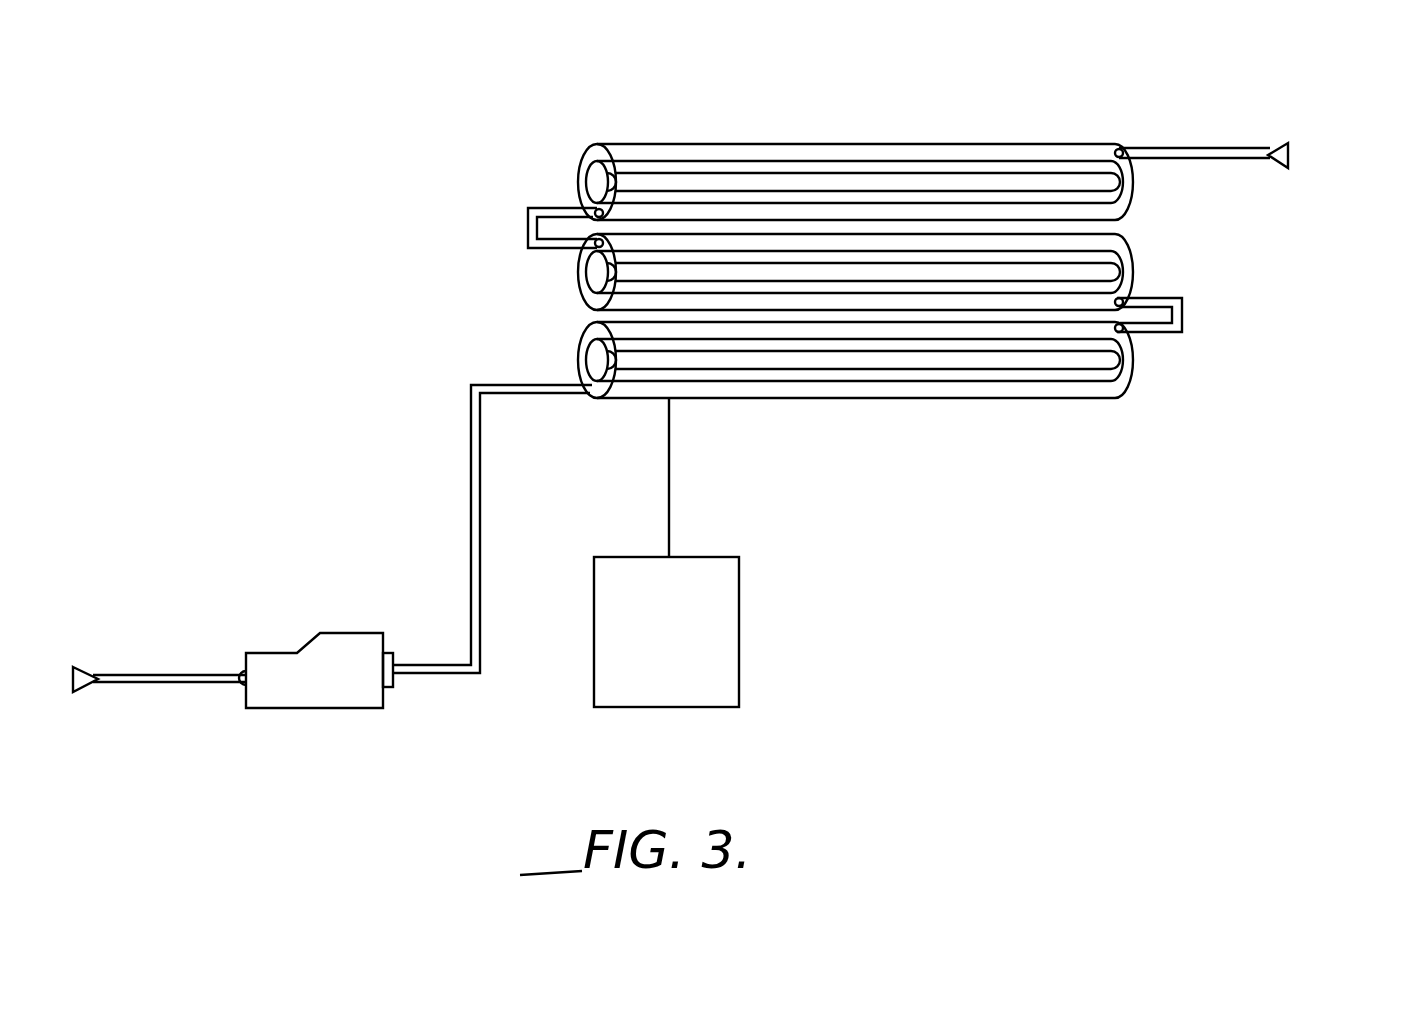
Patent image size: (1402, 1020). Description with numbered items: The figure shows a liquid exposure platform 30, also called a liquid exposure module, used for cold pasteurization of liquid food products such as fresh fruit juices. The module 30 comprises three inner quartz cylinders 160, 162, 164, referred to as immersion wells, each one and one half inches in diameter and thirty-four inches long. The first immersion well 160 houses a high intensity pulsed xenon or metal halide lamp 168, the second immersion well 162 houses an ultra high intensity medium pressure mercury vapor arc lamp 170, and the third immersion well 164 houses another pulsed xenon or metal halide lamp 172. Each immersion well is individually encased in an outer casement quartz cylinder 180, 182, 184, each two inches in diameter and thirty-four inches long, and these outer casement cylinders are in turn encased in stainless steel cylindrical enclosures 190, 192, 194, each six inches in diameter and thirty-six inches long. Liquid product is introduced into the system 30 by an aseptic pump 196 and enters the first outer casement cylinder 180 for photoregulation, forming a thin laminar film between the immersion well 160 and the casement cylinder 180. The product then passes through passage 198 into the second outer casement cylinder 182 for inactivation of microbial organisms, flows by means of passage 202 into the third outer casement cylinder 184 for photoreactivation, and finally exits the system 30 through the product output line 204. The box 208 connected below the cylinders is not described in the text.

The liquid exposure platform 30 is at (537, 103).
The inner quartz cylinder 160 is at (1135, 378).
The inner quartz cylinder 162 is at (1143, 248).
The inner quartz cylinder 164 is at (1140, 200).
The high intensity pulsed xenon or metal halide lamp 168 is at (1073, 370).
The ultra high intensity medium pressure mercury vapor arc lamp 170 is at (600, 282).
The pulsed xenon or metal halide lamp 172 is at (983, 174).
The outer casement quartz cylinder 180 is at (1128, 345).
The outer casement quartz cylinder 182 is at (1130, 292).
The outer casement quartz cylinder 184 is at (1133, 177).
The cylindrical enclosure 190 is at (940, 400).
The cylindrical enclosure 192 is at (605, 313).
The cylindrical enclosure 194 is at (867, 145).
The aseptic pump 196 is at (352, 708).
The passage 198 is at (1185, 318).
The passage 202 is at (548, 208).
The product output line 204 is at (1292, 142).
The power supply 208 is at (743, 603).